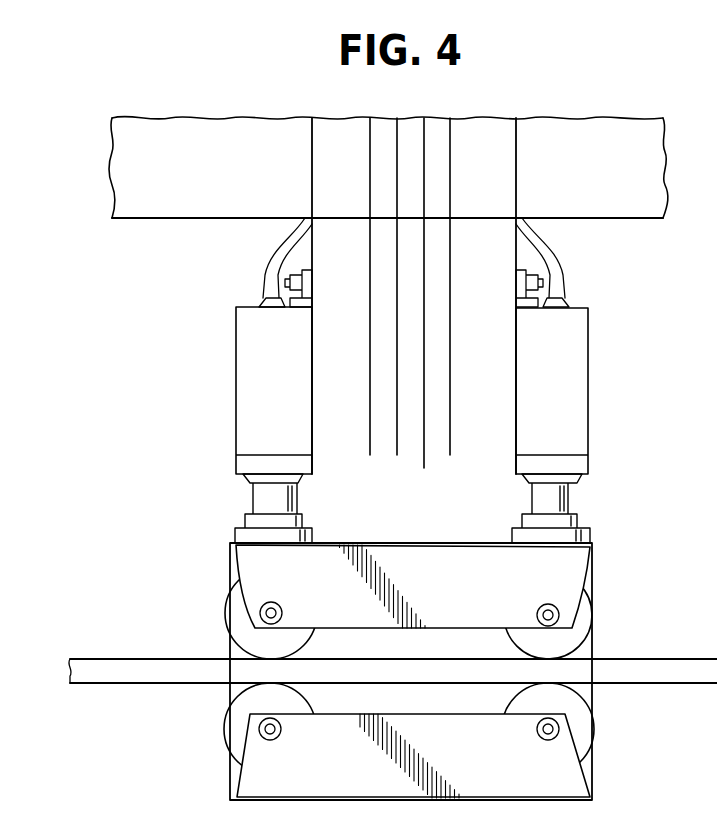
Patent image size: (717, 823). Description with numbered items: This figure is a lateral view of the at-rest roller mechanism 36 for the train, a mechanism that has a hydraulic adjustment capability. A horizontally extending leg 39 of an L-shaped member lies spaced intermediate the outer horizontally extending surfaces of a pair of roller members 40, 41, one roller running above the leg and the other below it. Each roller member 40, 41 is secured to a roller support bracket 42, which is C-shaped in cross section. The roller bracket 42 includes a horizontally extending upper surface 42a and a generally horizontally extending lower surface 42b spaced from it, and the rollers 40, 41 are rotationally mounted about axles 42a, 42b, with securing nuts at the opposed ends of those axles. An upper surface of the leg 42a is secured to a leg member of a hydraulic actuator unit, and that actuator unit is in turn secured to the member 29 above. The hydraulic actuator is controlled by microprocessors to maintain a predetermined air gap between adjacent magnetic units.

The member 29 is at (498, 328).
The at-rest roller mechanism 36 is at (427, 642).
The horizontally extending leg 39 is at (168, 658).
The roller member 40 is at (233, 610).
The roller member 41 is at (230, 735).
The roller support bracket 42 is at (467, 528).
The horizontally extending upper surface 42a is at (280, 611).
The horizontally extending lower surface 42b is at (280, 737).